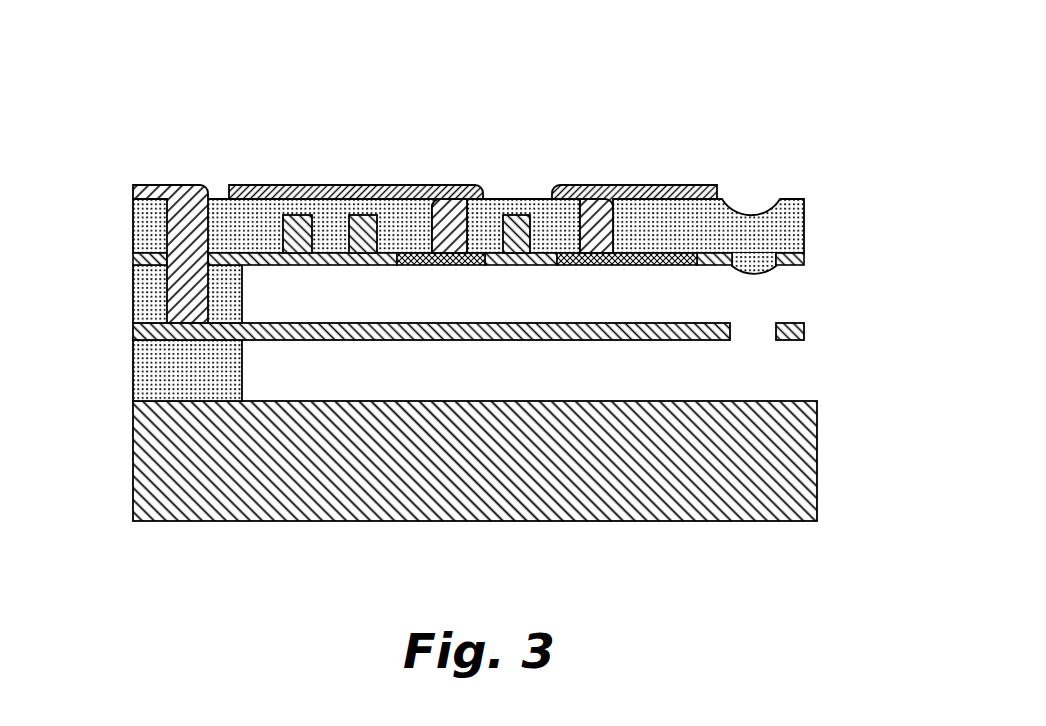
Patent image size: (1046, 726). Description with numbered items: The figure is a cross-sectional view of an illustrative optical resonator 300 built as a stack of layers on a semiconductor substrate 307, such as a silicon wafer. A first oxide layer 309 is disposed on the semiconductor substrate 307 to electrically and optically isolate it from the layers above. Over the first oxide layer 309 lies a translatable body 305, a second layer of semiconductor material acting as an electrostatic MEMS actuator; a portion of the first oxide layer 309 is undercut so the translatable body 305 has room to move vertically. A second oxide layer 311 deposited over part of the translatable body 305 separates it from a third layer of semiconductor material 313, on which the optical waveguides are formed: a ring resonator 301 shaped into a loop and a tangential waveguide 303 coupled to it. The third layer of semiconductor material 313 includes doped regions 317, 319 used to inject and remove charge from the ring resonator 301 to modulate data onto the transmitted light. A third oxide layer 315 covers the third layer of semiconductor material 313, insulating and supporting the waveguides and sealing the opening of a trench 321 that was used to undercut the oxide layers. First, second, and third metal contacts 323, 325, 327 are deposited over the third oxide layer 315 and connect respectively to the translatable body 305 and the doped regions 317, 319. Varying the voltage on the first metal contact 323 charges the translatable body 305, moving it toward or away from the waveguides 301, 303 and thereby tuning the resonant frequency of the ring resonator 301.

The optical resonator 300 is at (157, 89).
The ring resonator 301 is at (358, 199).
The tangential waveguide 303 is at (287, 199).
The translatable body 305 is at (708, 340).
The semiconductor substrate 307 is at (133, 462).
The first oxide layer 309 is at (133, 363).
The second oxide layer 311 is at (133, 287).
The third layer of semiconductor material 313 is at (133, 257).
The third oxide layer 315 is at (133, 220).
The doped region 317 is at (432, 265).
The doped region 319 is at (600, 265).
The trench 321 is at (750, 272).
The first metal contact 323 is at (167, 185).
The second metal contact 325 is at (433, 185).
The third metal contact 327 is at (610, 185).